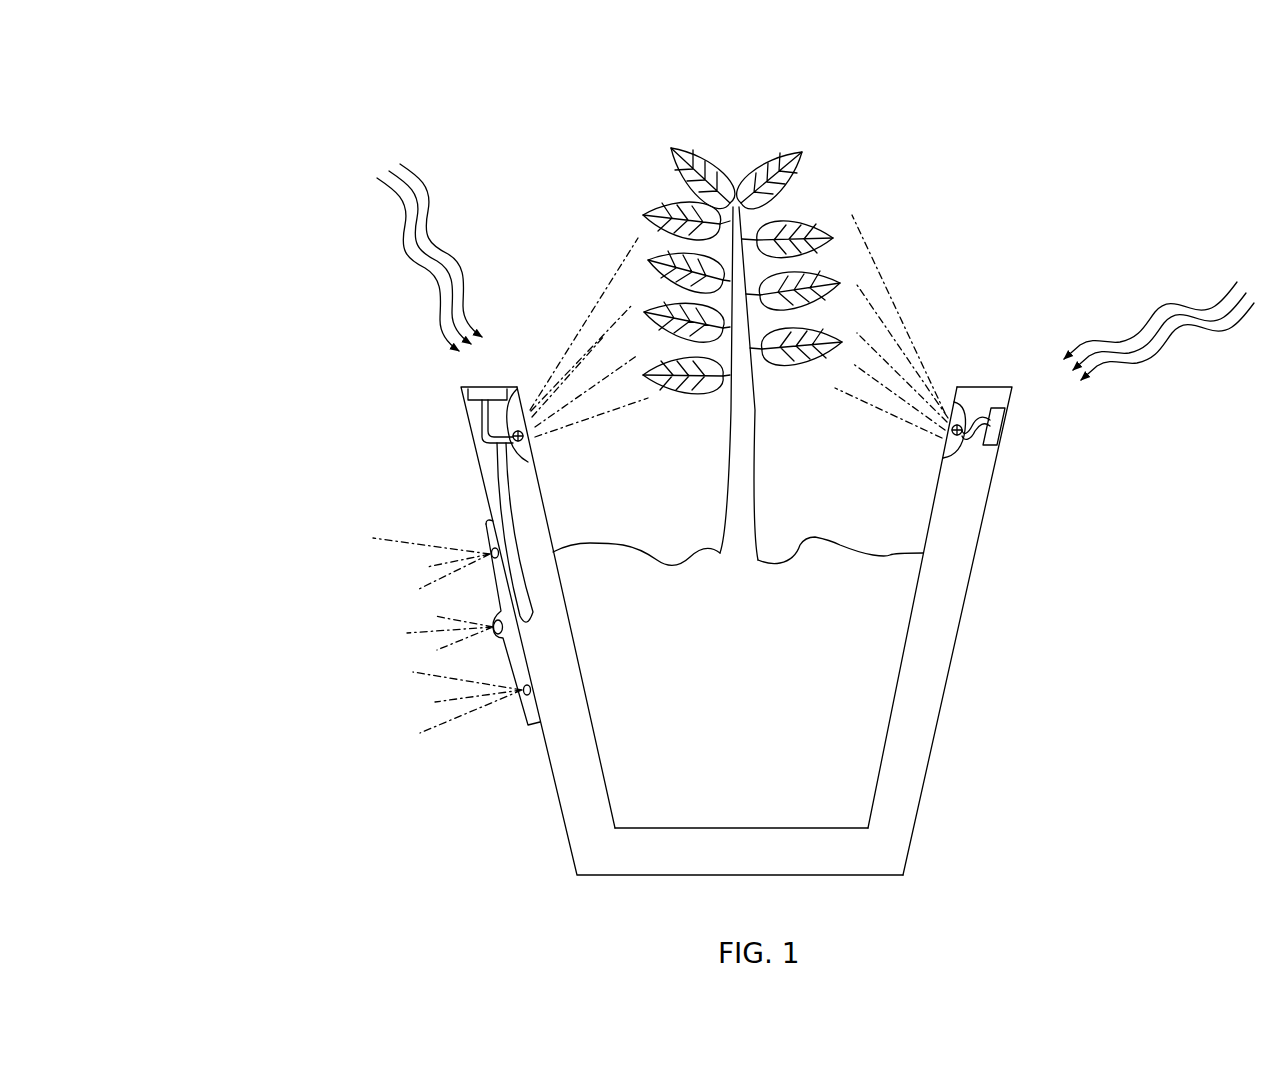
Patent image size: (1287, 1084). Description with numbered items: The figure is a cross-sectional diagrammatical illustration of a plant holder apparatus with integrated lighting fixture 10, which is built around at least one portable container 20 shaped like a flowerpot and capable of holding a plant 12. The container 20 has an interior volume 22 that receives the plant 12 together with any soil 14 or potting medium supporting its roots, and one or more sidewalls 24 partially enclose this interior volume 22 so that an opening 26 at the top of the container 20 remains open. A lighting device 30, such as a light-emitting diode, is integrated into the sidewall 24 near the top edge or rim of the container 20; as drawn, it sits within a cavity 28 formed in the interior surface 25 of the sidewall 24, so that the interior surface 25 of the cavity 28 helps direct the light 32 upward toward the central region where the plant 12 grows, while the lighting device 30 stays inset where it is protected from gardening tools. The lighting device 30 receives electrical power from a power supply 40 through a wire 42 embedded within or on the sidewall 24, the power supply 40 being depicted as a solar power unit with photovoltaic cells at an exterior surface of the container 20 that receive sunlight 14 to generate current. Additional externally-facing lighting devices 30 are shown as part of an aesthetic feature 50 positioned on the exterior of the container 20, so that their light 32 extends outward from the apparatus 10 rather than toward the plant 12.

The plant holder apparatus with integrated lighting fixture 10 is at (268, 138).
The plant 12 is at (826, 329).
The soil 14 is at (432, 272).
The portable container 20 is at (945, 687).
The interior volume 22 is at (805, 772).
The sidewall 24 is at (937, 608).
The interior surface 25 is at (565, 606).
The opening 26 is at (706, 457).
The cavity 28 is at (539, 449).
The lighting device 30 is at (527, 399).
The light 32 is at (604, 333).
The power supply 40 is at (451, 404).
The wire 42 is at (507, 456).
The aesthetic feature 50 is at (538, 733).